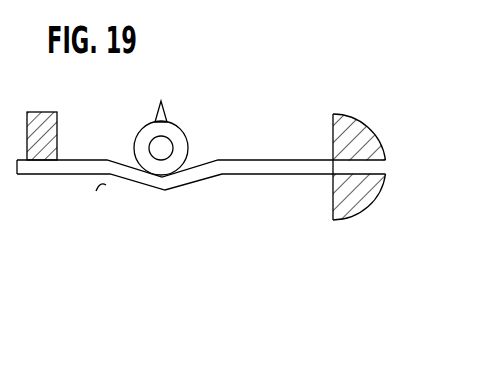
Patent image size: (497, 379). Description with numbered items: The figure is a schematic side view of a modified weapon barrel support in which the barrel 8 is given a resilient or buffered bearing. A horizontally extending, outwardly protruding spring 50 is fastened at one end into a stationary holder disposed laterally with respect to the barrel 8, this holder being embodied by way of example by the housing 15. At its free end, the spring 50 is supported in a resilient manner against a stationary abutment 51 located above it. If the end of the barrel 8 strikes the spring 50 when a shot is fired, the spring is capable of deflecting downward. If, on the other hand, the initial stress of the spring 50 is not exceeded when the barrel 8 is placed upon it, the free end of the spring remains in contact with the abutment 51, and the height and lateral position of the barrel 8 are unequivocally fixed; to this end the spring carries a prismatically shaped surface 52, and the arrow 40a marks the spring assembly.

The barrel 8 is at (177, 135).
The housing 15 is at (350, 137).
The lever arm 40a is at (230, 150).
The spring 50 is at (255, 168).
The abutment 51 is at (42, 128).
The prismatically shaped surface 52 is at (127, 160).